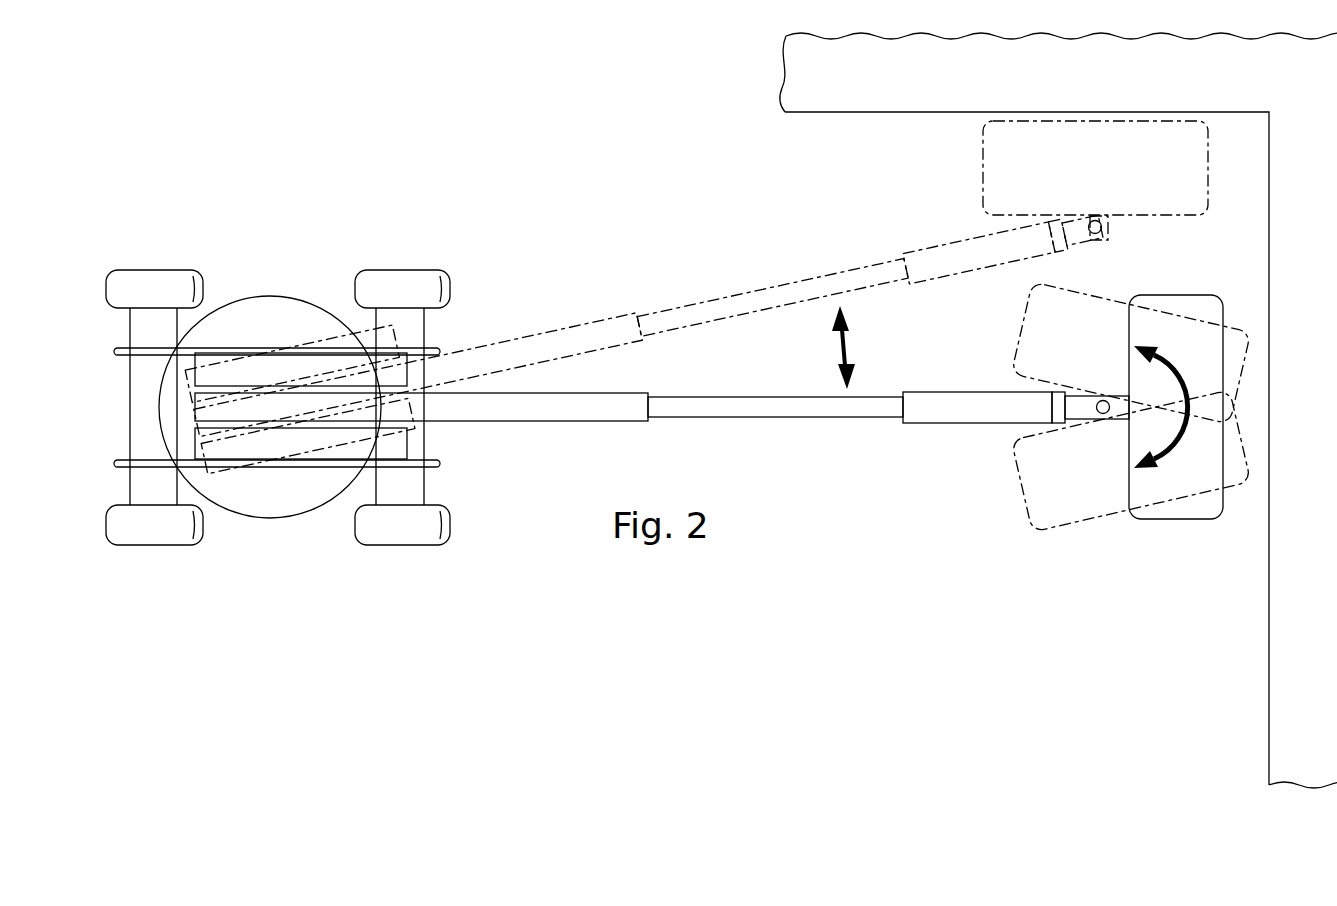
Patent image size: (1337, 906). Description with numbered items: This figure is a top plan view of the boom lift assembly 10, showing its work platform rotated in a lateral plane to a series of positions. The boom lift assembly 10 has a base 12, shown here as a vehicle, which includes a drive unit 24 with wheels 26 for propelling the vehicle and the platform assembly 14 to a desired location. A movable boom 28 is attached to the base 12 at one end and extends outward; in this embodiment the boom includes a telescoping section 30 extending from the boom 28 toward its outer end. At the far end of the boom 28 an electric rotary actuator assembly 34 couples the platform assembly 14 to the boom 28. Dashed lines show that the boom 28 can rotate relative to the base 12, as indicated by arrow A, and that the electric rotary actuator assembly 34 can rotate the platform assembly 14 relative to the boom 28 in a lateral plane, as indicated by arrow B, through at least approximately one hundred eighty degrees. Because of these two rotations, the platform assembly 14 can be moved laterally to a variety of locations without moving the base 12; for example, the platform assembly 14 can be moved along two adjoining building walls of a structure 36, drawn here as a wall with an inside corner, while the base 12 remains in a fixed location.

The boom lift assembly 10 is at (557, 190).
The base 12 is at (278, 401).
The platform assembly 14 is at (1178, 520).
The drive unit 24 is at (270, 519).
The wheels 26 is at (155, 269).
The movable boom 28 is at (536, 423).
The telescoping arm 30 is at (808, 447).
The electric rotary actuator assembly 34 is at (1097, 437).
The structure 36 is at (893, 113).